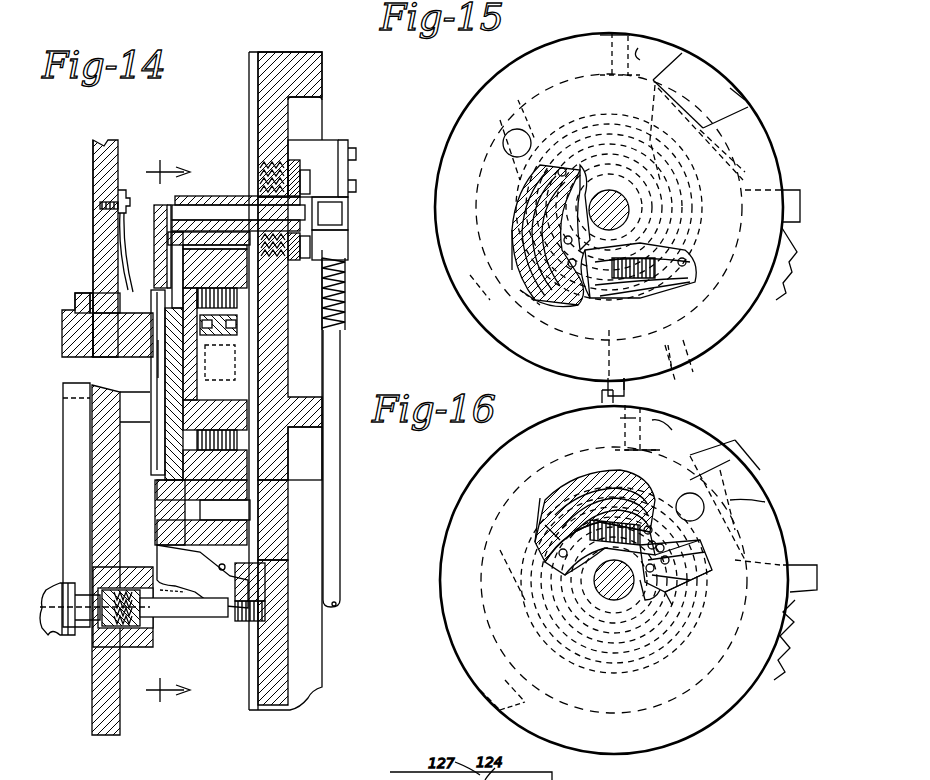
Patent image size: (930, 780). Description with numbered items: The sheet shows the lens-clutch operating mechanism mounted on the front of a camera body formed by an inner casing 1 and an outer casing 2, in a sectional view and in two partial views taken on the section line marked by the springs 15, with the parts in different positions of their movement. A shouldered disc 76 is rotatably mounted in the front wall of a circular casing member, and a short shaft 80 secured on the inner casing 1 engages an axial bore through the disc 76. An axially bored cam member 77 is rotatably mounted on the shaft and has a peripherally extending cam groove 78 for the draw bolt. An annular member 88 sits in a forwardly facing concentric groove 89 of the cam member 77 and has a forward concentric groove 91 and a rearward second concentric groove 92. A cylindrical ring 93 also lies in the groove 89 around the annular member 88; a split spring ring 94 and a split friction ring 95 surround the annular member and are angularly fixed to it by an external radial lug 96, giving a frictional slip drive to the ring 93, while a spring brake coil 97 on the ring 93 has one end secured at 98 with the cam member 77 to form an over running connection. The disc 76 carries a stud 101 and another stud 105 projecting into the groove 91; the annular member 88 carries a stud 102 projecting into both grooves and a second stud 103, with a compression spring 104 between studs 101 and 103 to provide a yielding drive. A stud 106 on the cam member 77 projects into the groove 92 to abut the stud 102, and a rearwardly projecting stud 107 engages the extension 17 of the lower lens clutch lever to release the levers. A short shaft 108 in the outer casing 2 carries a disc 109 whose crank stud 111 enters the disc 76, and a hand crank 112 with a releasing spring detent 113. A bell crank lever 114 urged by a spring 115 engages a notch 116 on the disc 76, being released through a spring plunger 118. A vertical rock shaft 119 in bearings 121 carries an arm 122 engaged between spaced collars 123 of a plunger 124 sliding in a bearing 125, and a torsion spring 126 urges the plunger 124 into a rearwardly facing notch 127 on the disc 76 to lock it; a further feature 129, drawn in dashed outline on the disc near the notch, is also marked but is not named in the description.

In FIG. 14, the inner casing 1 is at (306, 56).
In FIG. 14, the outer casing 2 is at (104, 140).
In FIG. 14, the springs 15 is at (168, 432).
In FIG. 15, the extension 17 is at (682, 53).
In FIG. 16, the extension 17 is at (765, 502).
In FIG. 14, the shouldered disc 76 is at (150, 212).
In FIG. 15, the shouldered disc 76 is at (740, 92).
In FIG. 16, the shouldered disc 76 is at (748, 500).
In FIG. 14, the cam member 77 is at (250, 480).
In FIG. 14, the cam groove 78 is at (252, 500).
In FIG. 14, the short shaft 80 is at (250, 373).
In FIG. 15, the short shaft 80 is at (620, 200).
In FIG. 16, the short shaft 80 is at (604, 600).
In FIG. 14, the annular member 88 is at (248, 348).
In FIG. 15, the annular member 88 is at (590, 290).
In FIG. 16, the annular member 88 is at (680, 588).
In FIG. 14, the concentric groove 89 is at (245, 301).
In FIG. 15, the concentric groove 89 is at (530, 233).
In FIG. 16, the concentric groove 89 is at (606, 485).
In FIG. 14, the concentric groove 91 is at (152, 320).
In FIG. 15, the concentric groove 91 is at (622, 222).
In FIG. 16, the concentric groove 91 is at (545, 560).
In FIG. 14, the second concentric groove 92 is at (240, 322).
In FIG. 15, the second concentric groove 92 is at (548, 192).
In FIG. 16, the second concentric groove 92 is at (646, 585).
In FIG. 14, the cylindrical ring 93 is at (245, 278).
In FIG. 15, the cylindrical ring 93 is at (540, 180).
In FIG. 16, the cylindrical ring 93 is at (545, 525).
In FIG. 14, the split spring ring 94 is at (150, 296).
In FIG. 15, the split spring ring 94 is at (535, 210).
In FIG. 16, the split spring ring 94 is at (586, 480).
In FIG. 14, the split friction ring 95 is at (135, 252).
In FIG. 15, the split friction ring 95 is at (545, 255).
In FIG. 16, the split friction ring 95 is at (570, 478).
In FIG. 15, the external radial lug 96 is at (520, 290).
In FIG. 16, the external radial lug 96 is at (660, 525).
In FIG. 14, the spring brake coil 97 is at (133, 251).
In FIG. 15, the spring brake coil 97 is at (528, 170).
In FIG. 16, the spring brake coil 97 is at (540, 498).
In FIG. 14, the secured end 98 is at (124, 219).
In FIG. 15, the secured end 98 is at (540, 305).
In FIG. 16, the secured end 98 is at (556, 486).
In FIG. 14, the stud 101 is at (152, 440).
In FIG. 15, the stud 101 is at (630, 296).
In FIG. 16, the stud 101 is at (648, 496).
In FIG. 14, the stud 102 is at (250, 450).
In FIG. 15, the stud 102 is at (558, 302).
In FIG. 16, the stud 102 is at (680, 548).
In FIG. 15, the second stud 103 is at (660, 262).
In FIG. 16, the second stud 103 is at (555, 540).
In FIG. 15, the compression spring 104 is at (676, 272).
In FIG. 16, the compression spring 104 is at (592, 548).
In FIG. 15, the stud 105 is at (512, 268).
In FIG. 16, the stud 105 is at (680, 605).
In FIG. 15, the stud 106 is at (580, 160).
In FIG. 16, the stud 106 is at (690, 566).
In FIG. 15, the rearwardly projecting stud 107 is at (512, 130).
In FIG. 16, the rearwardly projecting stud 107 is at (704, 500).
In FIG. 14, the short shaft 108 is at (178, 373).
In FIG. 14, the disc 109 is at (182, 397).
In FIG. 14, the crank stud 111 is at (155, 488).
In FIG. 14, the hand crank 112 is at (72, 636).
In FIG. 14, the releasing spring detent 113 is at (92, 290).
In FIG. 14, the bell crank lever 114 is at (222, 612).
In FIG. 15, the bell crank lever 114 is at (632, 378).
In FIG. 14, the spring 115 is at (250, 622).
In FIG. 14, the notch 116 is at (157, 538).
In FIG. 15, the notch 116 is at (606, 380).
In FIG. 16, the notch 116 is at (675, 432).
In FIG. 14, the spring plunger 118 is at (165, 612).
In FIG. 14, the rock shaft 119 is at (342, 350).
In FIG. 14, the bearings 121 is at (354, 164).
In FIG. 14, the arm 122 is at (352, 246).
In FIG. 14, the spaced collars 123 is at (318, 198).
In FIG. 14, the plunger 124 is at (224, 204).
In FIG. 15, the plunger 124 is at (622, 34).
In FIG. 16, the plunger 124 is at (636, 418).
In FIG. 14, the bearing 125 is at (260, 185).
In FIG. 14, the torsion spring 126 is at (348, 290).
In FIG. 14, the rearwardly facing notch 127 is at (172, 207).
In FIG. 15, the rearwardly facing notch 127 is at (640, 48).
In FIG. 16, the rearwardly facing notch 127 is at (525, 702).
In FIG. 15, the slot 129 is at (682, 350).
In FIG. 16, the slot 129 is at (640, 445).